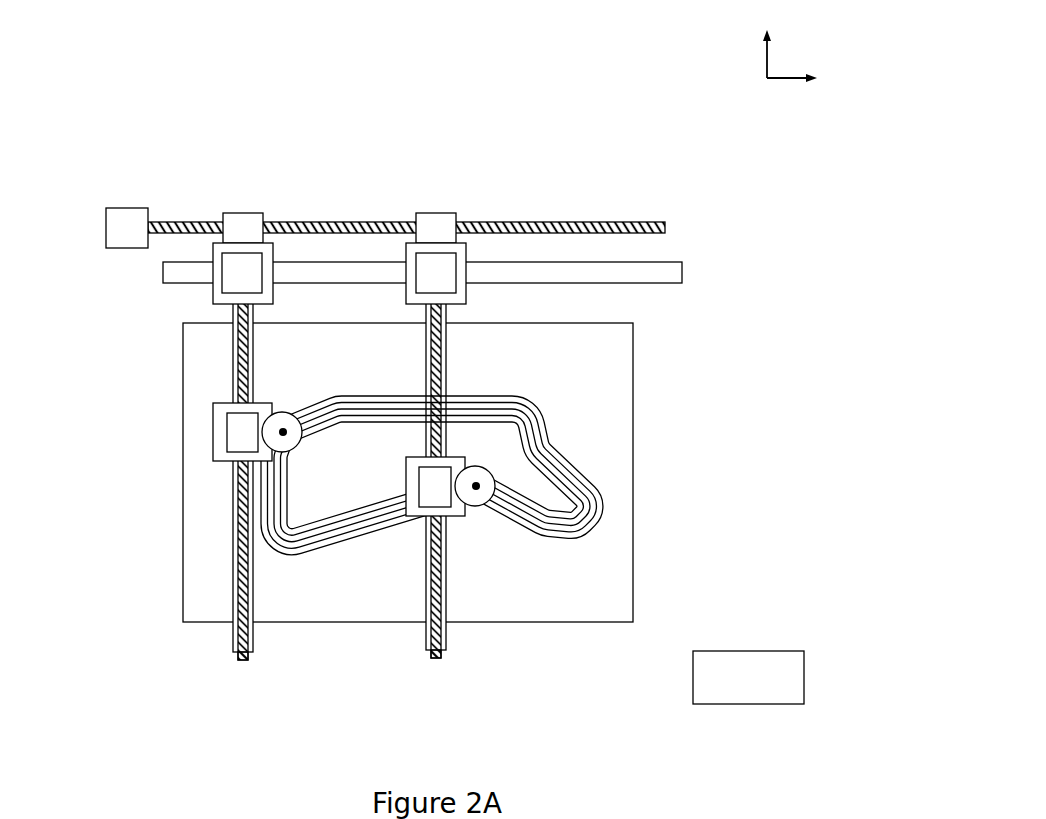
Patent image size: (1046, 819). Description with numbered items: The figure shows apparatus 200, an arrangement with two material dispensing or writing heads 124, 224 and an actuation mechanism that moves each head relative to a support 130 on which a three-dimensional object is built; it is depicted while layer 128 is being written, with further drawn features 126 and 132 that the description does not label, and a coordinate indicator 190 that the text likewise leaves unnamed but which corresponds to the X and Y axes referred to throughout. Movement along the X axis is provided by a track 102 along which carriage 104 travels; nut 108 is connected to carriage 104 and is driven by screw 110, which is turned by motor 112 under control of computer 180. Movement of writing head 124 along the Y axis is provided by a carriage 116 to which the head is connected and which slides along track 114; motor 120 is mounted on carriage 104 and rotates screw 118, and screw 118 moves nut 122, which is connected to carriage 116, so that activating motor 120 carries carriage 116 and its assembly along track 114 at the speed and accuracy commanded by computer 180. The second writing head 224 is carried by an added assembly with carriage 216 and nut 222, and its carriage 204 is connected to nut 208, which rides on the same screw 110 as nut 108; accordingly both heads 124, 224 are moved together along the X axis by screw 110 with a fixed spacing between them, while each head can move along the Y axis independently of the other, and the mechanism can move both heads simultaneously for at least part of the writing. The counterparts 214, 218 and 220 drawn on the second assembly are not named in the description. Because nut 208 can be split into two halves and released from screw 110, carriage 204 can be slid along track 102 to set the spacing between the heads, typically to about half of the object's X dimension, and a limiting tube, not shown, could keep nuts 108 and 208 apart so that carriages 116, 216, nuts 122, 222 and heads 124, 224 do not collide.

The apparatus 200 is at (160, 58).
The track 102 is at (658, 273).
The carriage 104 is at (268, 253).
The nut 108 is at (242, 218).
The screw 110 is at (655, 222).
The motor 112 is at (120, 223).
The track 114 is at (237, 604).
The carriage 116 is at (213, 405).
The screw 118 is at (240, 660).
The motor 120 is at (236, 276).
The nut 122 is at (240, 430).
The writing head 124 is at (290, 418).
The flexible band lower run 126 is at (360, 505).
The layer 128 is at (313, 560).
The support 130 is at (636, 357).
The flexible multilayer band 132 is at (600, 536).
The computer 180 is at (709, 673).
The coordinate axes 190 is at (757, 76).
The carriage 204 is at (459, 253).
The nut 208 is at (432, 226).
The second vertical shaft 214 is at (445, 640).
The carriage 216 is at (413, 516).
The second shaft end 218 is at (434, 657).
The second carriage block 220 is at (433, 273).
The nut 222 is at (435, 487).
The writing head 224 is at (478, 485).